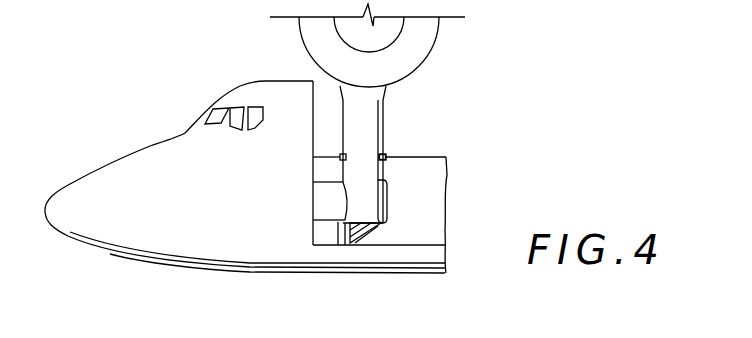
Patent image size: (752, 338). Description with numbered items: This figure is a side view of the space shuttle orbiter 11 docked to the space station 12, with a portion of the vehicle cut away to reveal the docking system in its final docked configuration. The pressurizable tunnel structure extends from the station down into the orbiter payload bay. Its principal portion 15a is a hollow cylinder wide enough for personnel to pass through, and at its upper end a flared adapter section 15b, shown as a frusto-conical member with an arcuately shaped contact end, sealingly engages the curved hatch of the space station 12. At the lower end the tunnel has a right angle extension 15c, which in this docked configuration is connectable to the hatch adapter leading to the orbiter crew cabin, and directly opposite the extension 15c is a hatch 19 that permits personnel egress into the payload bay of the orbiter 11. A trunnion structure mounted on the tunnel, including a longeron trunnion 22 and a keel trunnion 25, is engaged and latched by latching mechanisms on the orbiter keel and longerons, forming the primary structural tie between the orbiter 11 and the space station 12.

The space shuttle orbiter 11 is at (153, 147).
The space station 12 is at (300, 43).
The principal portion of tunnel structure 15a is at (343, 130).
The flared adapter section 15b is at (387, 90).
The right angle extension 15c is at (340, 222).
The hatch 19 is at (388, 203).
The longeron trunnion 22 is at (386, 155).
The keel trunnion 25 is at (365, 243).